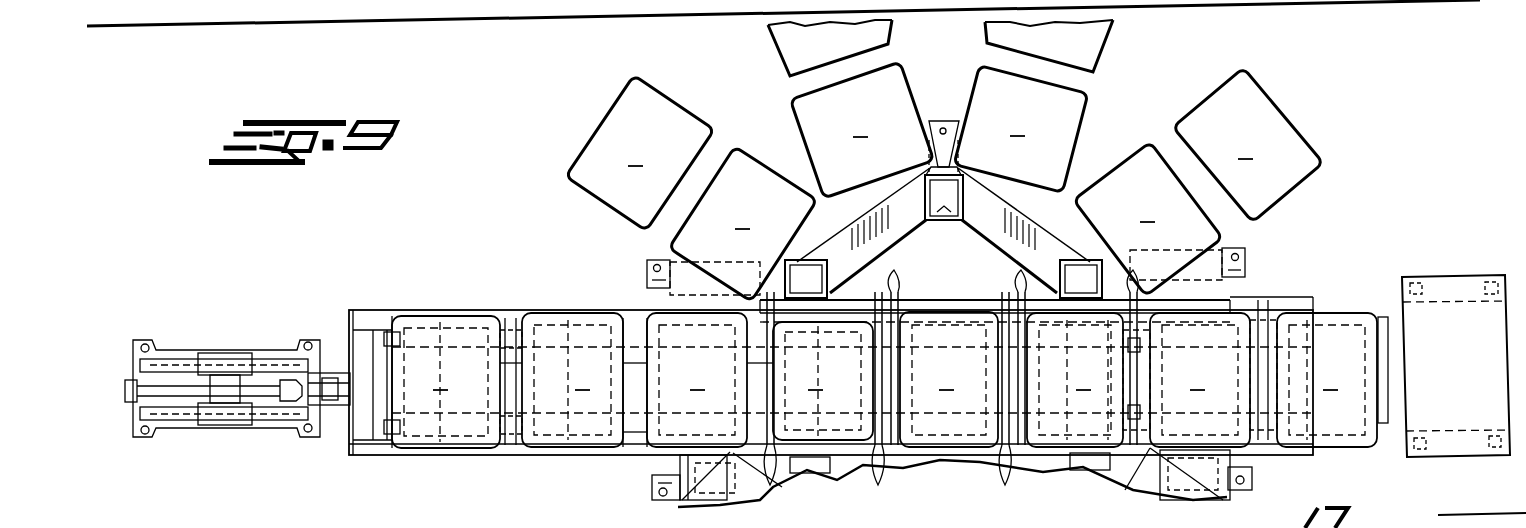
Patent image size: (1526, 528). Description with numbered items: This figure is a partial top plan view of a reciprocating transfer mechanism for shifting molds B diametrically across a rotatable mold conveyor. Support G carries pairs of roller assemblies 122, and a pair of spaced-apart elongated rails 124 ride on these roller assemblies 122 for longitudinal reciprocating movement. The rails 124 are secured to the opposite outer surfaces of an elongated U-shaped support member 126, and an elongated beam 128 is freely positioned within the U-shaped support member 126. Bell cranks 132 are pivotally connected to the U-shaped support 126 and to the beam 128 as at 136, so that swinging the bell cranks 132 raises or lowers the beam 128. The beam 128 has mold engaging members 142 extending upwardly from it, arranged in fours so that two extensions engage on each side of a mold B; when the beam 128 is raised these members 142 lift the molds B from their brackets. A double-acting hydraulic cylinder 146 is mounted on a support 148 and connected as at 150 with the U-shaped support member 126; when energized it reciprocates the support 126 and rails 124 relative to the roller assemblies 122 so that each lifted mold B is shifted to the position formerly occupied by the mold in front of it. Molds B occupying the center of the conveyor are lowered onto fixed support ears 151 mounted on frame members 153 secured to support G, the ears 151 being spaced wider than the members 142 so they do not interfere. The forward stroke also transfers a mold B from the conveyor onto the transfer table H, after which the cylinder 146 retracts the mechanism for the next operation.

The roller assemblies 122 is at (678, 448).
The rails 124 is at (581, 310).
The U-shaped support member 126 is at (371, 304).
The beam 128 is at (633, 363).
The bell cranks 132 is at (1262, 333).
The pivotal connection 136 is at (1127, 390).
The mold engaging members 142 is at (387, 343).
The double-acting hydraulic cylinder 146 is at (178, 385).
The support 148 is at (298, 343).
The connection 150 is at (328, 380).
The fixed support ears 151 is at (763, 300).
The frame members 153 is at (845, 293).
The mold B is at (890, 234).
The support G is at (975, 239).
The transfer table H is at (1468, 270).